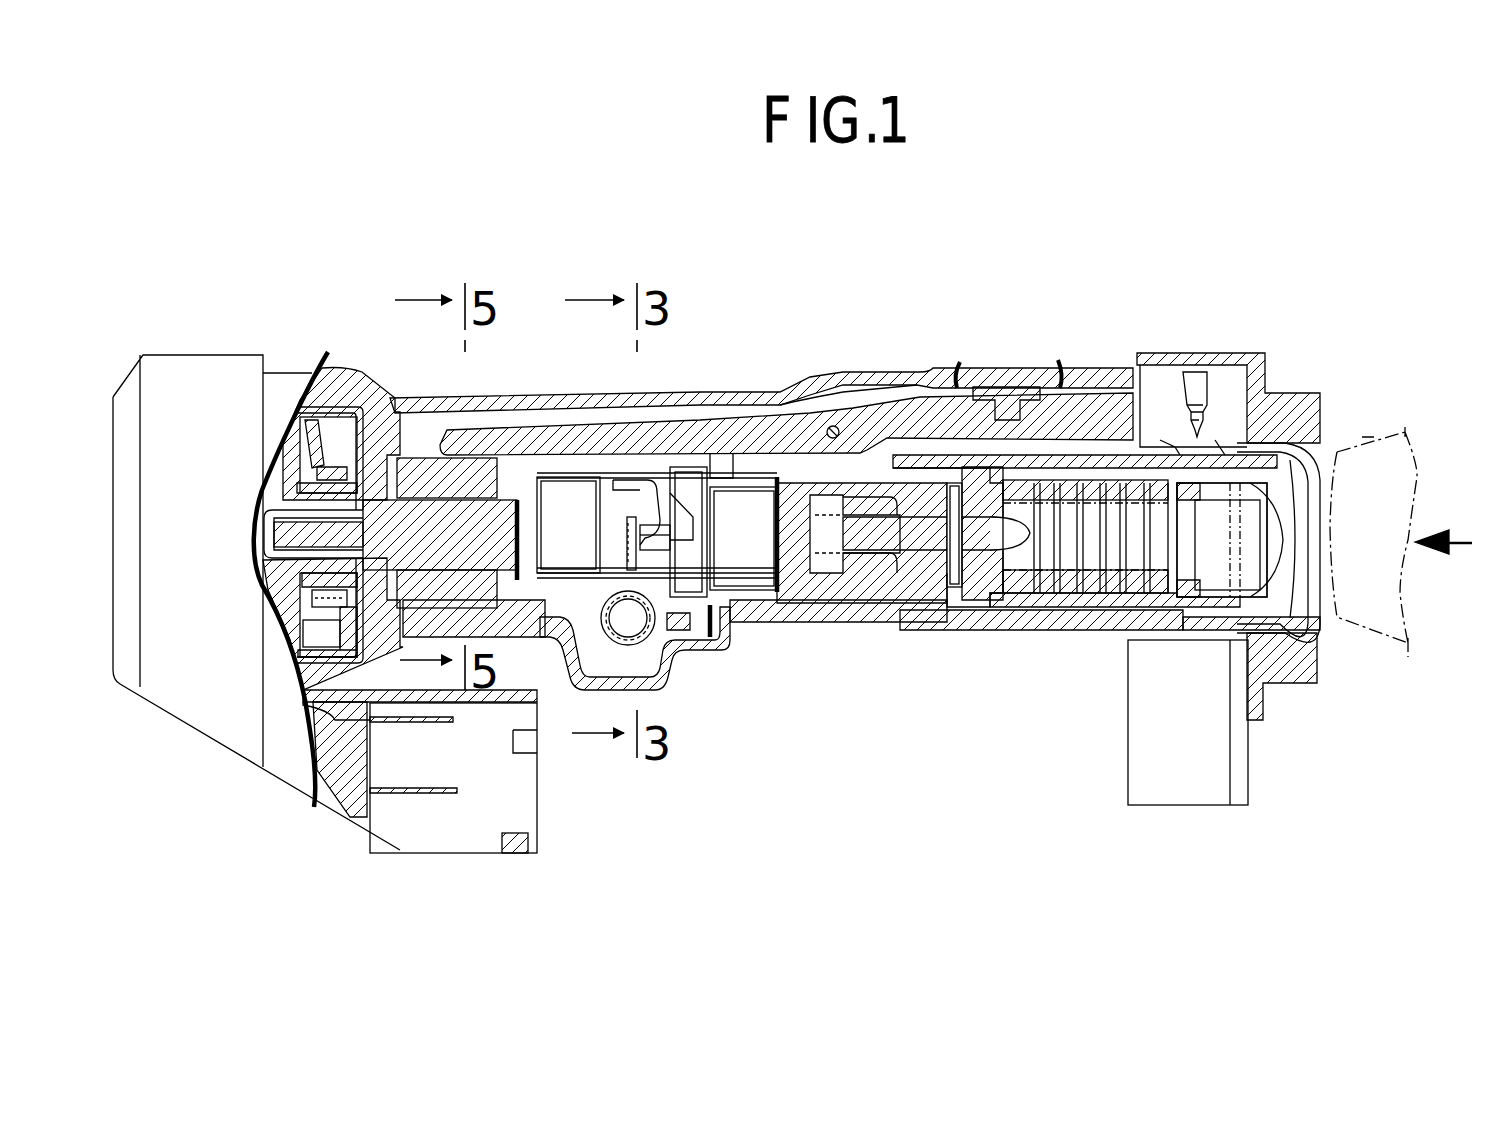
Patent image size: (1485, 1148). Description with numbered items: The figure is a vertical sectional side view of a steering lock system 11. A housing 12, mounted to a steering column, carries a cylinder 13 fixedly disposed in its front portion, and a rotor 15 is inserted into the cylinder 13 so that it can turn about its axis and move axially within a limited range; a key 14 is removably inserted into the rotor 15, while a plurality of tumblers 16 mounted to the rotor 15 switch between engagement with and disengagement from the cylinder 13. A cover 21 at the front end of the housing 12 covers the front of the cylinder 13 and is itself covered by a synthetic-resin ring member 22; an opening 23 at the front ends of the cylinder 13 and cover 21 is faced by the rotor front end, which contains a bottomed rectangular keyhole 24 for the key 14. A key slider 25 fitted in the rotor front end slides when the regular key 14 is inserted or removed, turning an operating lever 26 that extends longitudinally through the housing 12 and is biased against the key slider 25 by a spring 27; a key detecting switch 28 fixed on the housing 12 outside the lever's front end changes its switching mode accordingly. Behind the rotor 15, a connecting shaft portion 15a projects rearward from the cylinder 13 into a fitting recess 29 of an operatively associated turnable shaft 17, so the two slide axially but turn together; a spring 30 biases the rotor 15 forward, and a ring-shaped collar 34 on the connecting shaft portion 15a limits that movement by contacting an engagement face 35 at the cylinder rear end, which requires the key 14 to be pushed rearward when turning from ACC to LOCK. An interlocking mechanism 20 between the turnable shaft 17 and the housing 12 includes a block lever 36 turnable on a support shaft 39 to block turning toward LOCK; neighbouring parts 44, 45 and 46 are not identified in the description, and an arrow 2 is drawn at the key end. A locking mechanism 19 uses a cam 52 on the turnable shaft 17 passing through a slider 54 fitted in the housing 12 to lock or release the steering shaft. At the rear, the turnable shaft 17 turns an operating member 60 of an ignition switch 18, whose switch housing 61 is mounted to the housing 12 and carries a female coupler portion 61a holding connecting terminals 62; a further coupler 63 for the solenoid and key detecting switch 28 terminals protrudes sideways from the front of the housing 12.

The rotation direction 2 is at (1443, 518).
The steering lock system 11 is at (833, 365).
The housing 12 is at (582, 400).
The cylinder 13 is at (1090, 458).
The key 14 is at (1368, 437).
The rotor 15 is at (985, 603).
The connecting shaft portion 15a is at (857, 565).
The tumblers 16 is at (1103, 597).
The operatively associated turnable shaft 17 is at (752, 565).
The ignition switch 18 is at (289, 370).
The locking mechanism 19 is at (428, 445).
The interlocking mechanism 20 is at (610, 655).
The cover 21 is at (1195, 370).
The ring member 22 is at (1290, 393).
The opening 23 is at (1283, 500).
The keyhole 24 is at (1247, 545).
The key slider 25 is at (1200, 600).
The operating lever 26 is at (876, 405).
The spring 27 is at (1020, 393).
The key detecting switch 28 is at (1175, 400).
The fitting recess 29 is at (810, 480).
The spring 30 is at (915, 573).
The collar 34 is at (957, 590).
The engagement face 35 is at (967, 445).
The block lever 36 is at (677, 572).
The support shaft 39 is at (617, 617).
The bracket 44 is at (655, 468).
The stopper 45 is at (700, 467).
The hook 46 is at (613, 478).
The cam 52 is at (427, 517).
The slider 54 is at (400, 650).
The operating member 60 is at (275, 573).
The switch housing 61 is at (195, 380).
The coupler portion 61a is at (510, 851).
The connecting terminals 62 is at (467, 793).
The coupler 63 is at (1213, 773).